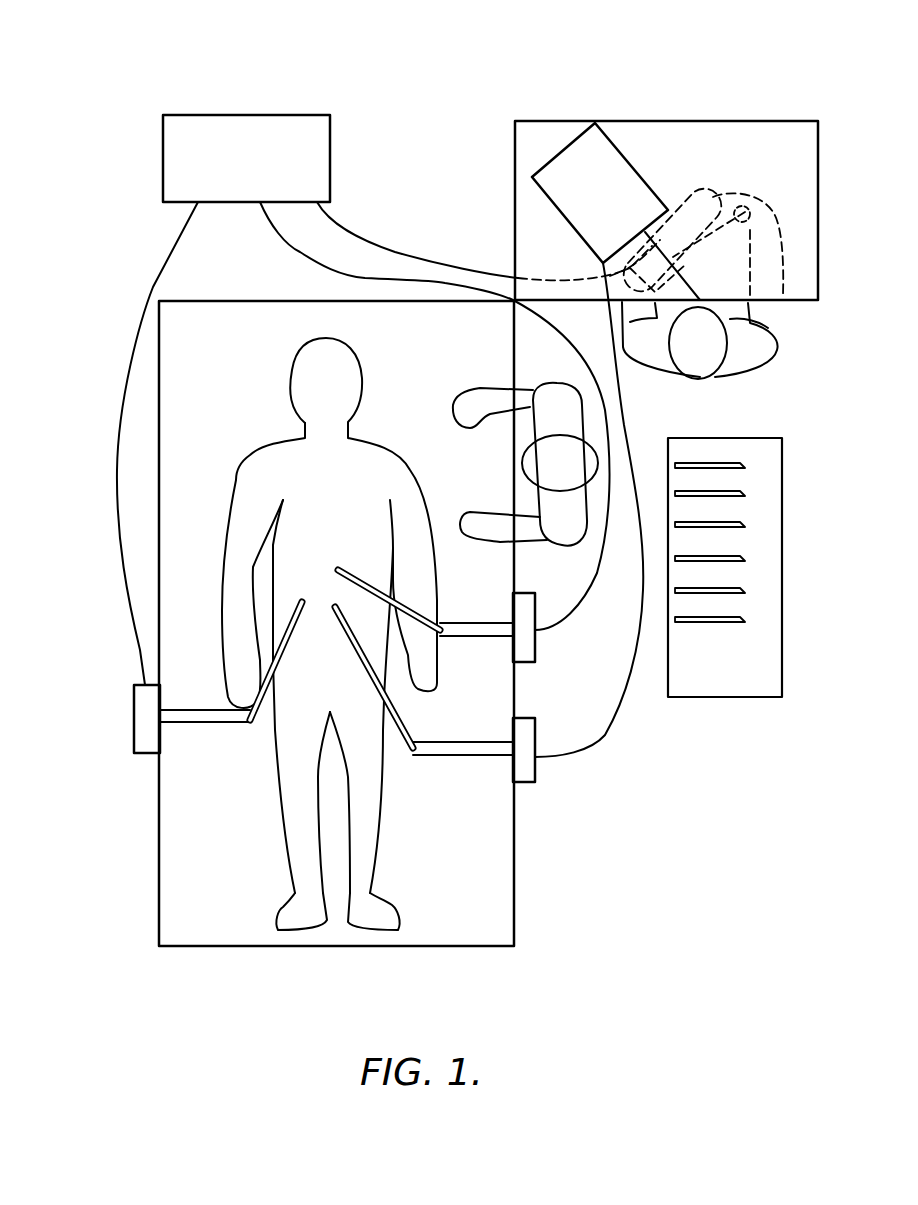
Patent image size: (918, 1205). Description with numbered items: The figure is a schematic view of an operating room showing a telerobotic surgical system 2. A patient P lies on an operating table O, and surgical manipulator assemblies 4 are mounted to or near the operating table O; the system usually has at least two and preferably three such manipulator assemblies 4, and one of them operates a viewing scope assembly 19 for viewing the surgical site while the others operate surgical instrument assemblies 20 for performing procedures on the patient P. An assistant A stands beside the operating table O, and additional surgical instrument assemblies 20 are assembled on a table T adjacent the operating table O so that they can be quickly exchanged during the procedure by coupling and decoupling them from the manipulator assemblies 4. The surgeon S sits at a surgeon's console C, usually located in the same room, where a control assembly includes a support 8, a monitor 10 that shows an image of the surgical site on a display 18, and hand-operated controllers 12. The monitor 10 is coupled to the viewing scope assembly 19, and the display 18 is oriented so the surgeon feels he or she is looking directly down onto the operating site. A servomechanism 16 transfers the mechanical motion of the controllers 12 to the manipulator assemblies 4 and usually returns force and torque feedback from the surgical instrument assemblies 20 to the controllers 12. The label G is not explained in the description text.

The telerobotic surgical system 2 is at (439, 477).
The surgical manipulator assemblies 4 is at (486, 614).
The support 8 is at (670, 128).
The monitor 10 is at (600, 160).
The controllers 12 is at (748, 233).
The servomechanism 16 is at (309, 115).
The display 18 is at (724, 179).
The viewing scope assembly 19 is at (412, 732).
The surgical instrument assemblies 20 is at (357, 572).
The assistant A is at (556, 403).
The surgeon's console C is at (666, 192).
The graphical display G is at (557, 105).
The operating table O is at (159, 840).
The patient P is at (241, 448).
The surgeon S is at (780, 345).
The table T is at (783, 640).